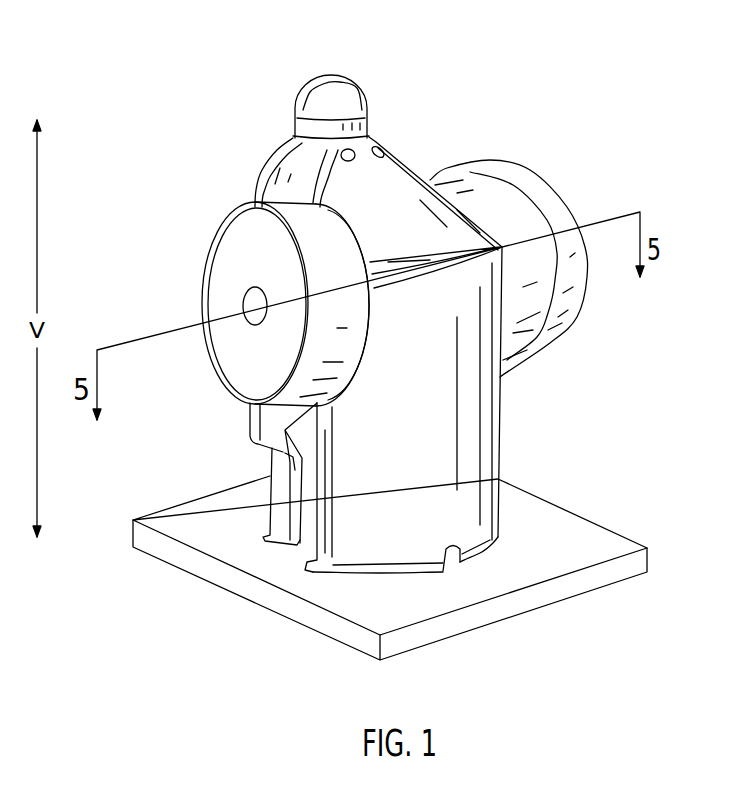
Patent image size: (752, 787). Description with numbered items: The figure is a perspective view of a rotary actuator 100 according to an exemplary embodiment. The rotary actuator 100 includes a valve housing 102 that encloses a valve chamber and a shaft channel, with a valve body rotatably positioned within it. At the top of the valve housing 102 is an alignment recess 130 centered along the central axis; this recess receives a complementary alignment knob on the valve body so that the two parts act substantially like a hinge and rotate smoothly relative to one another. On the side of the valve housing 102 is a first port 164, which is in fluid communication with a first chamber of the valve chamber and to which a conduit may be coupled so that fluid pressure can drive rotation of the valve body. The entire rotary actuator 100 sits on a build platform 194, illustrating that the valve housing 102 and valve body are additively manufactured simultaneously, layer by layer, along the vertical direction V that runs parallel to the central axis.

The rotary actuator 100 is at (175, 125).
The valve housing 102 is at (397, 150).
The alignment recess 130 is at (336, 100).
The first port 164 is at (247, 297).
The build platform 194 is at (647, 548).